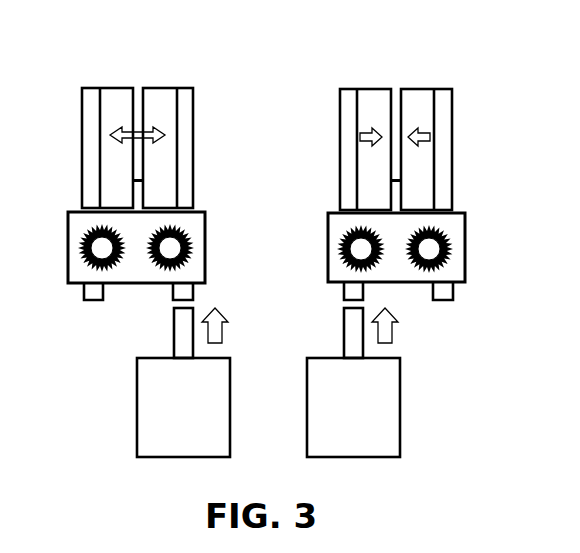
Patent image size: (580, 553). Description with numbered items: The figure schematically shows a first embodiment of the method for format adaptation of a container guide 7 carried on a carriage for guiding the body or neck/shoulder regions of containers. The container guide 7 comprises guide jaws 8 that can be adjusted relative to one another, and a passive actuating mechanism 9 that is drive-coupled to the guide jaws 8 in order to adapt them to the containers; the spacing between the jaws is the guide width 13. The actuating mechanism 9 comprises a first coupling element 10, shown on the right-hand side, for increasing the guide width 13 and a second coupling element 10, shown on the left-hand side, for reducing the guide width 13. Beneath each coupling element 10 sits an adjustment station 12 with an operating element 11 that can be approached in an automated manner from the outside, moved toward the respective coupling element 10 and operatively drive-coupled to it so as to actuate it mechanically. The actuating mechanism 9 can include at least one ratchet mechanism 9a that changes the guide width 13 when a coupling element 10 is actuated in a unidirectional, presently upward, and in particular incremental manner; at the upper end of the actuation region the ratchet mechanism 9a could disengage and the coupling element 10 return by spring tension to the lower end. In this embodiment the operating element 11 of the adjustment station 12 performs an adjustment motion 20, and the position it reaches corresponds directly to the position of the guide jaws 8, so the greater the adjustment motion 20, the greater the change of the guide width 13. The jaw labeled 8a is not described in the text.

The container guide 7 is at (125, 77).
The guide jaws 8 is at (409, 126).
The gripping jaw 8a is at (422, 163).
The actuating mechanism 9 is at (130, 297).
The ratchet mechanism 9a is at (100, 246).
The coupling element 10 is at (93, 291).
The operating element 11 is at (183, 333).
The adjustment station 12 is at (171, 419).
The guide width 13 is at (143, 133).
The adjustment motion 20 is at (218, 333).